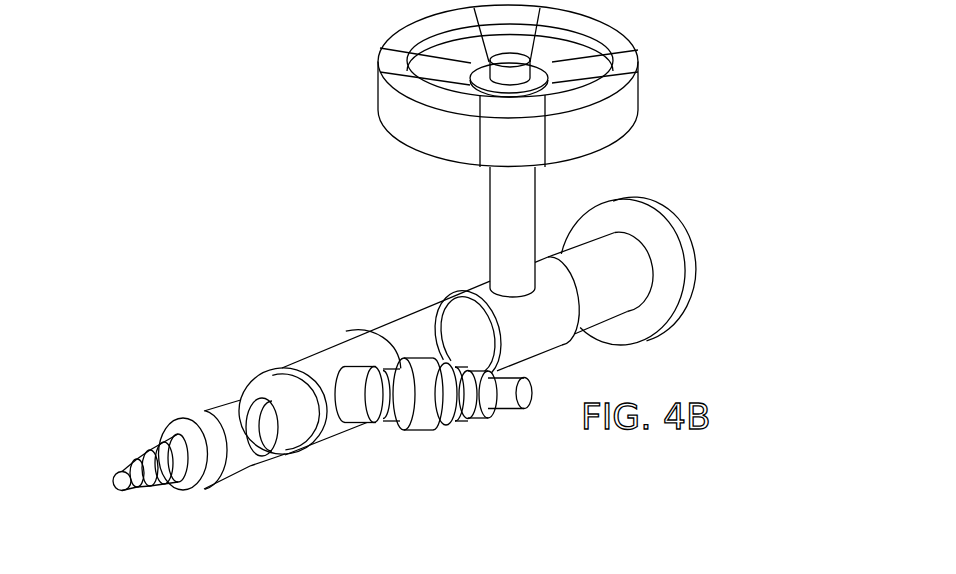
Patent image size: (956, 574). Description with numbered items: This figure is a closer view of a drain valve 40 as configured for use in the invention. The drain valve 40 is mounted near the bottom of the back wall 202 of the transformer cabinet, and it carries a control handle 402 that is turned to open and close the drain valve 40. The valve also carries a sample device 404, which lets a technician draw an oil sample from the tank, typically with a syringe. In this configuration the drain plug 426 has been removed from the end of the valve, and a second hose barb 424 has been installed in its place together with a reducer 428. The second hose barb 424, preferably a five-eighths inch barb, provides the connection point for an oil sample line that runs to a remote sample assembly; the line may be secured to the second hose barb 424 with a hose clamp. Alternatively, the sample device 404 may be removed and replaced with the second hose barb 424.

The drain valve 40 is at (258, 263).
The back wall 202 is at (709, 156).
The control handle 402 is at (417, 123).
The sample device 404 is at (512, 401).
The second hose barb 424 is at (121, 480).
The drain plug 426 is at (84, 0).
The reducer 428 is at (287, 388).